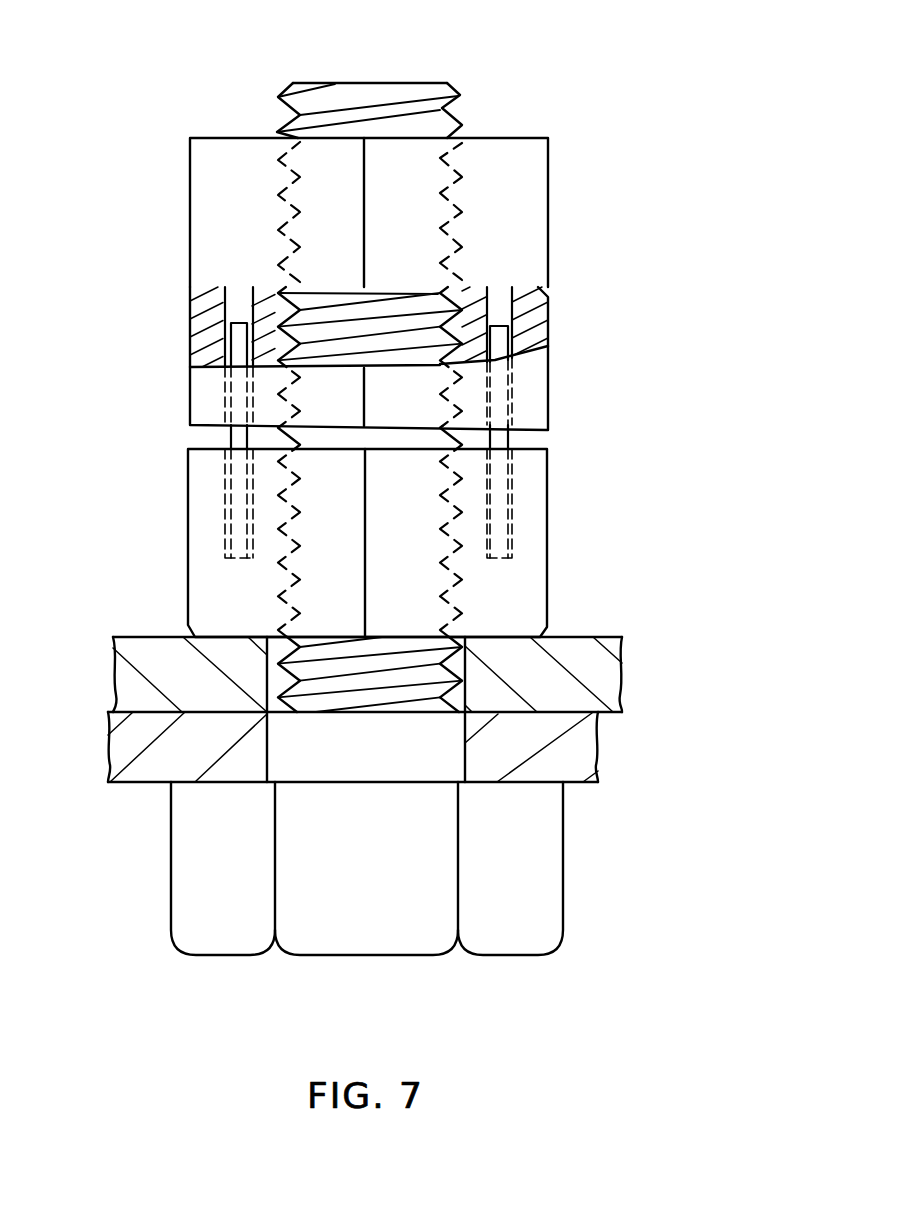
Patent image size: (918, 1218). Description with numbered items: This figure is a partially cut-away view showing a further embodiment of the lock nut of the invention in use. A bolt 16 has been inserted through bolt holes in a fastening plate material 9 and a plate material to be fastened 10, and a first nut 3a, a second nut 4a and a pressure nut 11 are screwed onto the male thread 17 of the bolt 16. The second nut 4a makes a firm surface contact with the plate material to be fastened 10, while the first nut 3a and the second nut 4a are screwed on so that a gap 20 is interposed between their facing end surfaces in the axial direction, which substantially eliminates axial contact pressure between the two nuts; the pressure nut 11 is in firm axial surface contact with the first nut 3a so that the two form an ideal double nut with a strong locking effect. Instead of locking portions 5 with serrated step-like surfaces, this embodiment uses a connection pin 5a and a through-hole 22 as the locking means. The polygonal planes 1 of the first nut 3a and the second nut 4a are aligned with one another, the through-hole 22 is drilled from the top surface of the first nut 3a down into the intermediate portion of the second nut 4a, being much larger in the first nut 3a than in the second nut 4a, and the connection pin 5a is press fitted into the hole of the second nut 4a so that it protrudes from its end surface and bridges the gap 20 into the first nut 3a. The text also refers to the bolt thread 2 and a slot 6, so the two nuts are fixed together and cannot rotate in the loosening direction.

The polygonal planes 1 is at (357, 400).
The bolt thread 2 is at (440, 297).
The first nut 3a is at (550, 317).
The second nut 4a is at (547, 575).
The locking portions 5 is at (448, 440).
The connection pin 5a is at (513, 443).
The left slot 6 is at (214, 280).
The fastening plate material 9 is at (587, 743).
The plate material to be fastened 10 is at (603, 677).
The pressure nut 11 is at (242, 143).
The bolt 16 is at (420, 958).
The male thread 17 is at (453, 97).
The gap 20 is at (197, 435).
The through-hole 22 is at (497, 300).